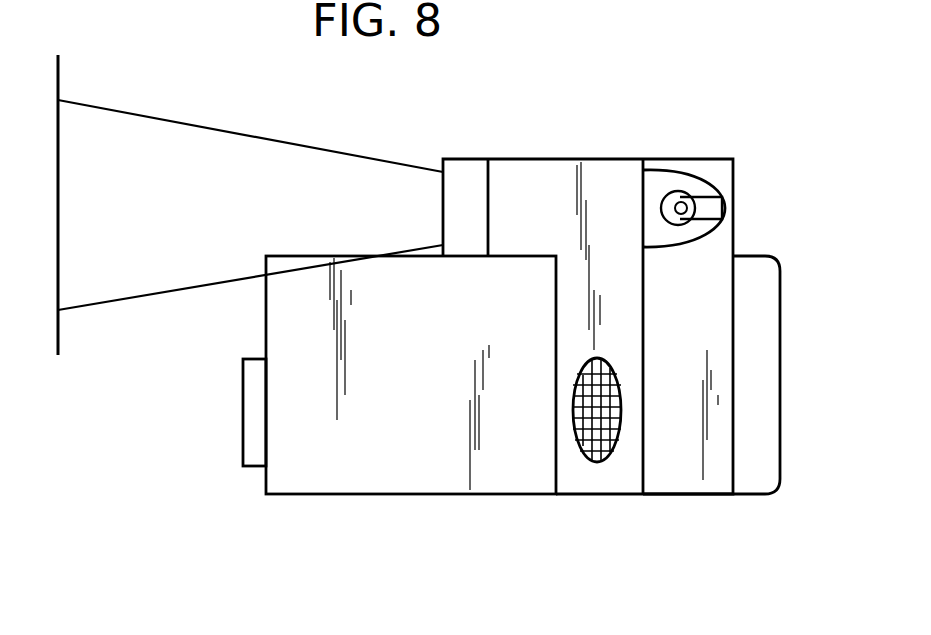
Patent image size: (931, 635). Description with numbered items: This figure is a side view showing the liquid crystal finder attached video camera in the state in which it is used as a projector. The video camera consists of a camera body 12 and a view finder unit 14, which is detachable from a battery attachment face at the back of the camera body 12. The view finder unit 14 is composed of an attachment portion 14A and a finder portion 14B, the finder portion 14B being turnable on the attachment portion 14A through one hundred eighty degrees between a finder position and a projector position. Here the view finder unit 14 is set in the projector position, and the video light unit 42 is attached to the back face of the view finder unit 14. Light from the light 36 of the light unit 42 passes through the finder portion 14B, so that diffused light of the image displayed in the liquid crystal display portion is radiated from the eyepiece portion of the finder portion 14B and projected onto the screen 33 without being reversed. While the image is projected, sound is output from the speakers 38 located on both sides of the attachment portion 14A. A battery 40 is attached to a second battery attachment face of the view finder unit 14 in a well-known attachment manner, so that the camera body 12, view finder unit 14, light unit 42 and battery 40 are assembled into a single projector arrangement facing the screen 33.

The camera body 12 is at (401, 495).
The view finder unit 14 is at (575, 161).
The attachment portion 14A is at (628, 322).
The finder portion 14B is at (517, 182).
The screen 33 is at (58, 80).
The light 36 is at (680, 191).
The speakers 38 is at (600, 461).
The battery 40 is at (754, 475).
The video light unit 42 is at (686, 475).